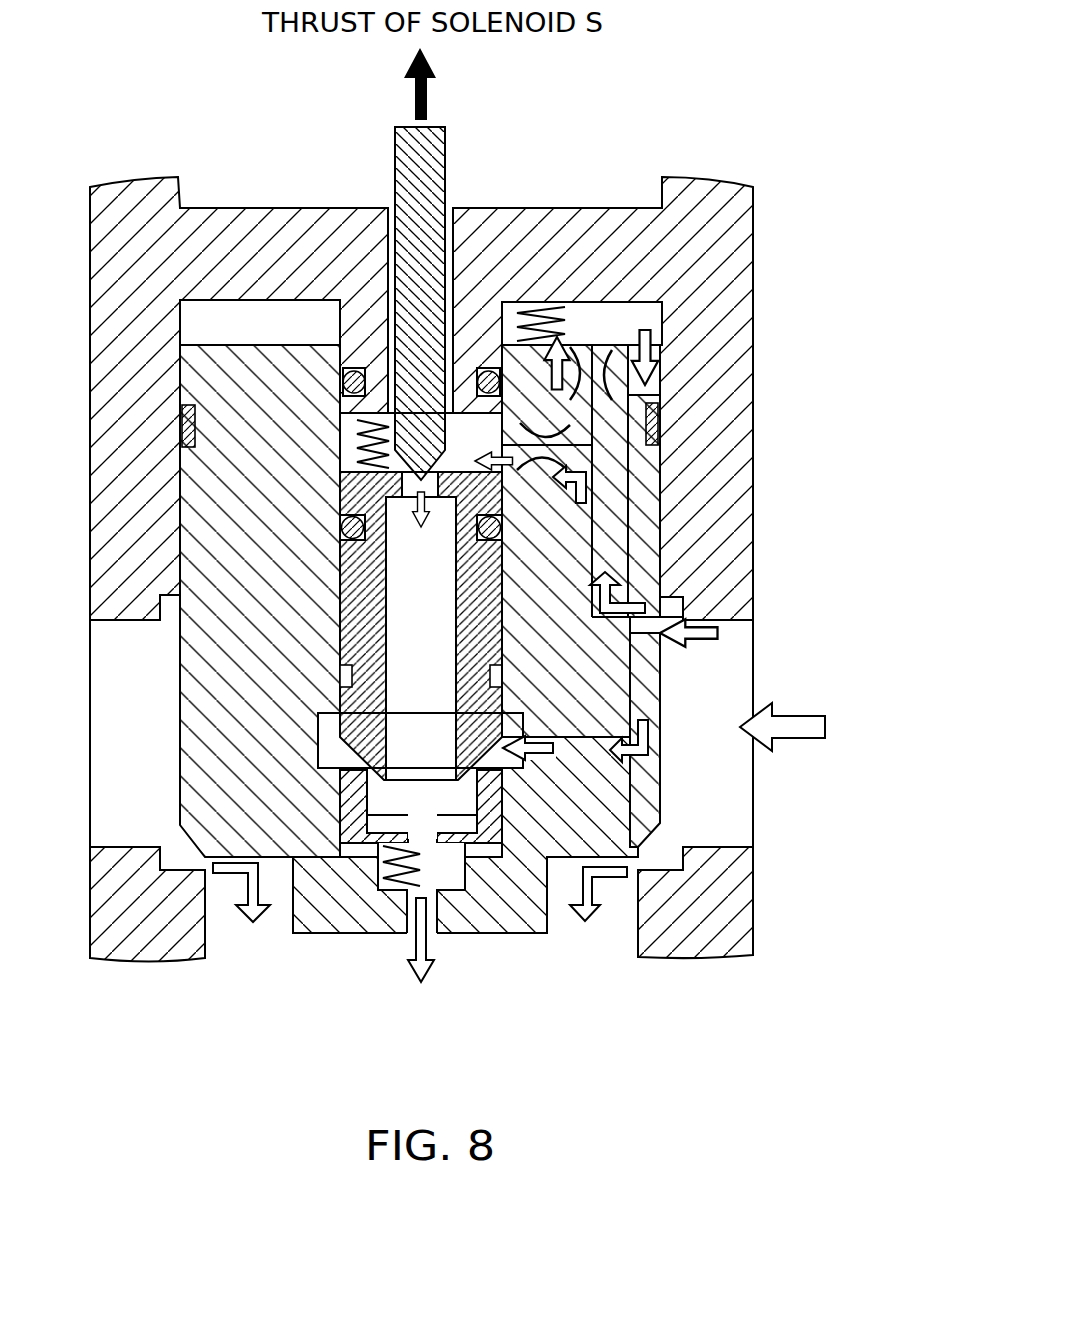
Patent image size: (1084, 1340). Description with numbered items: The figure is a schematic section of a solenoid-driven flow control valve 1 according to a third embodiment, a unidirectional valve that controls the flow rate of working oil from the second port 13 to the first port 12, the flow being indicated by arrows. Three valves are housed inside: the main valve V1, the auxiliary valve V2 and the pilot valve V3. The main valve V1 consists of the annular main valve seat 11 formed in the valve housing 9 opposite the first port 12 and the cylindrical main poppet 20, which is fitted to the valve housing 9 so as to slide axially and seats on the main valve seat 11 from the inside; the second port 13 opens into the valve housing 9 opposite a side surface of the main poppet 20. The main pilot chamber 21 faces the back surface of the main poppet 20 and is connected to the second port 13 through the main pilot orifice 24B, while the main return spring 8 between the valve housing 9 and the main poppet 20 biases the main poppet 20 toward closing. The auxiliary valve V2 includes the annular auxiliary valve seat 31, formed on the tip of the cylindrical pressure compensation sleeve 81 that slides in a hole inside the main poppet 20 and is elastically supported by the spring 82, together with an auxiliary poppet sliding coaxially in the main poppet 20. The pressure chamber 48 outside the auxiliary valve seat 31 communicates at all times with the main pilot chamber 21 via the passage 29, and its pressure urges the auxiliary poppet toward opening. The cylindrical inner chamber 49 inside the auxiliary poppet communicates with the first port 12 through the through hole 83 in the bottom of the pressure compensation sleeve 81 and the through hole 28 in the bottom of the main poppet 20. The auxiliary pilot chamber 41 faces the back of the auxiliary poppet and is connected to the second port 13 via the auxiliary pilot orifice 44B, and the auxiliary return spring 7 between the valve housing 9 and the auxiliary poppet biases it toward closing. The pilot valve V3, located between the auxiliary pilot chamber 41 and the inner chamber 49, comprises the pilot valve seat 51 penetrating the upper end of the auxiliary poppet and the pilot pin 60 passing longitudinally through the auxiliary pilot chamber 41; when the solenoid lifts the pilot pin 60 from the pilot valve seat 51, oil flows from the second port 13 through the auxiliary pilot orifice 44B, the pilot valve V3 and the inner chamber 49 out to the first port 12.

The solenoid-driven flow control valve 1 is at (748, 164).
The auxiliary return spring 7 is at (386, 410).
The pilot pin 60 is at (393, 183).
The pilot valve seat 51 is at (433, 445).
The main return spring 8 is at (553, 332).
The valve housing 9 is at (737, 235).
The main pilot orifice 24B is at (650, 383).
The passage 29 is at (660, 415).
The auxiliary pilot orifice 44B is at (600, 443).
The second port 13 is at (728, 793).
The pressure chamber 48 is at (488, 757).
The auxiliary valve seat 31 is at (350, 760).
The spring 82 is at (415, 882).
The through hole 28 is at (433, 905).
The pressure compensation sleeve 81 is at (478, 790).
The main poppet 20 is at (525, 913).
The main valve seat 11 is at (627, 880).
The first port 12 is at (610, 925).
The main pilot chamber 21 is at (242, 341).
The auxiliary pilot chamber 41 is at (492, 448).
The inner chamber 49 is at (437, 701).
The through hole 83 is at (422, 803).
The main valve V1 is at (228, 885).
The auxiliary valve V2 is at (382, 786).
The pilot valve V3 is at (430, 525).